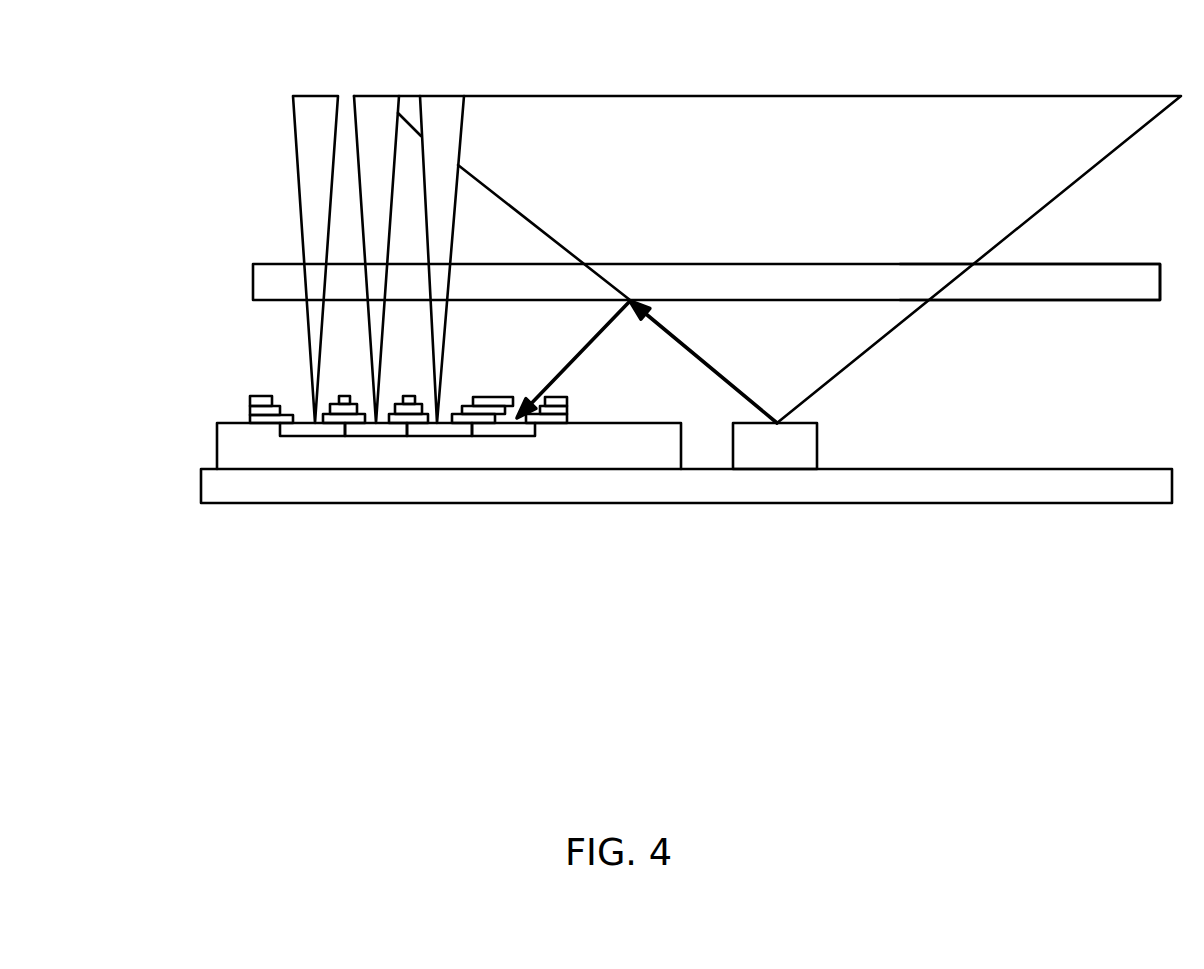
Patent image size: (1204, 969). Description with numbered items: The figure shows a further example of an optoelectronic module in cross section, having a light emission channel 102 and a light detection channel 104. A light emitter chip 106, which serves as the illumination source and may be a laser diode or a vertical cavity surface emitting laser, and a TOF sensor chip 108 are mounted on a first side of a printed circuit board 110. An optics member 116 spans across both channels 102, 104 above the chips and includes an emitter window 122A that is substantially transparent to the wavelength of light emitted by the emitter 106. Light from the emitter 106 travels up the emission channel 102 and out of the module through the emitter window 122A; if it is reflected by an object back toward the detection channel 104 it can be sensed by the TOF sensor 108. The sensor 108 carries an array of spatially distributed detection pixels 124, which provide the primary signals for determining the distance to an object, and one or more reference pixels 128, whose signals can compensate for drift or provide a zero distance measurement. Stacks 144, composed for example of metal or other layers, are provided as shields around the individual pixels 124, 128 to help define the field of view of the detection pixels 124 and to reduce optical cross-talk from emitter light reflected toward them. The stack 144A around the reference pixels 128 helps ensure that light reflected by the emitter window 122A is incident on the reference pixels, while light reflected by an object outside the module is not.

The light emission channel 102 is at (793, 365).
The light detection channel 104 is at (365, 338).
The light emitter chip 106 is at (802, 448).
The TOF sensor chip 108 is at (263, 450).
The printed circuit board 110 is at (817, 493).
The optics member 116 is at (263, 280).
The emitter window 122A is at (1032, 285).
The detection pixels 124 is at (323, 433).
The reference pixels 128 is at (495, 435).
The stacks 144 is at (262, 395).
The stack 144A is at (565, 398).